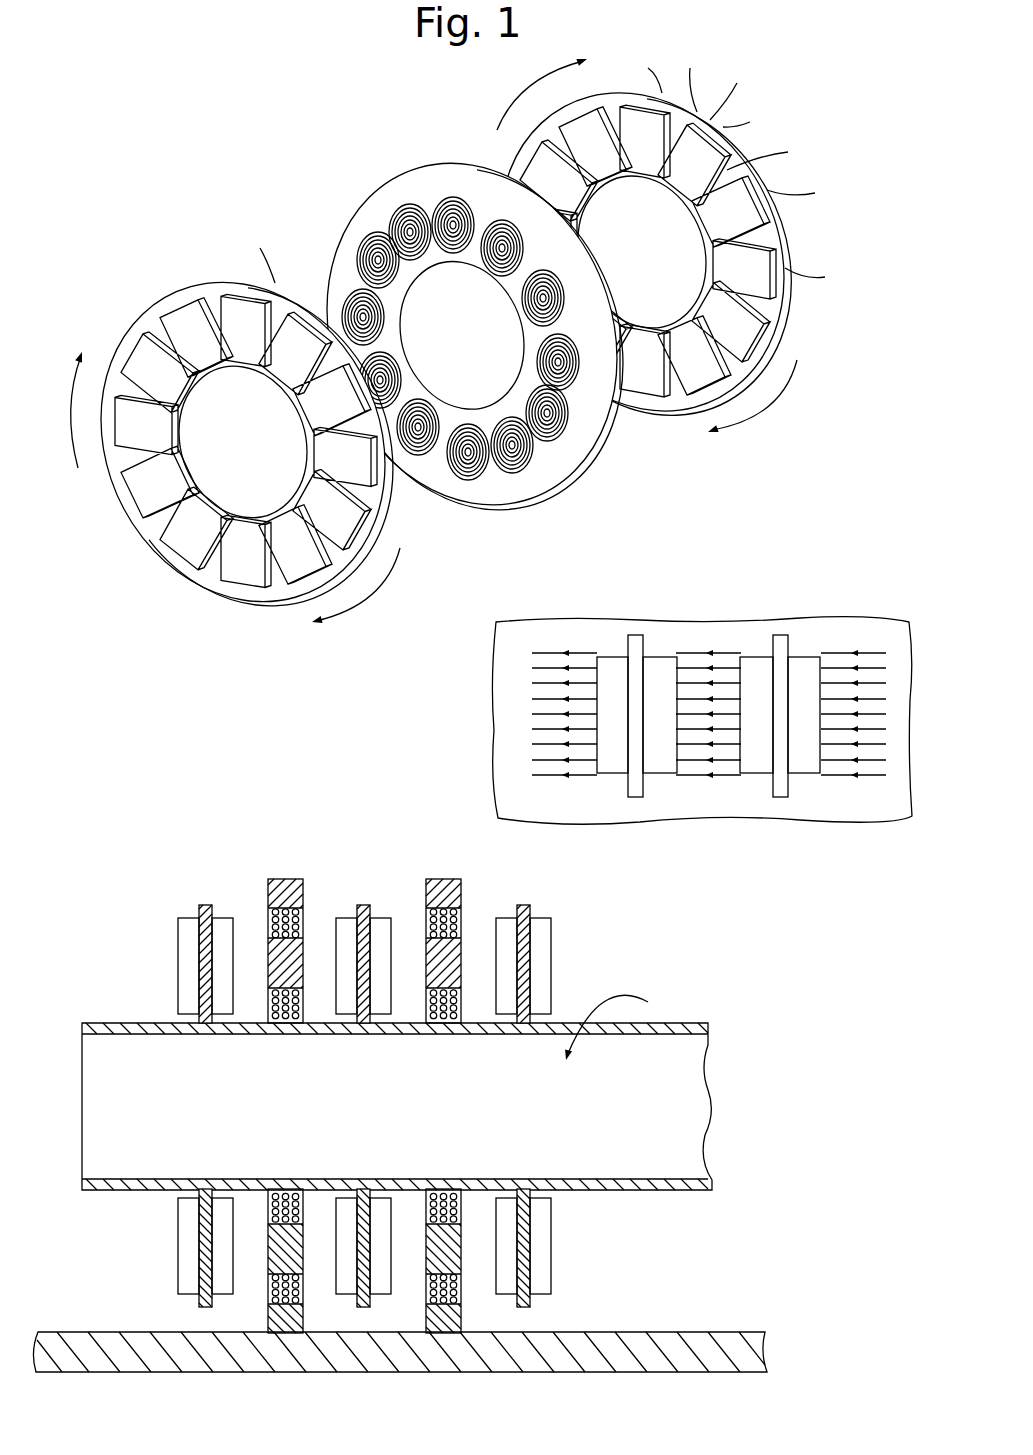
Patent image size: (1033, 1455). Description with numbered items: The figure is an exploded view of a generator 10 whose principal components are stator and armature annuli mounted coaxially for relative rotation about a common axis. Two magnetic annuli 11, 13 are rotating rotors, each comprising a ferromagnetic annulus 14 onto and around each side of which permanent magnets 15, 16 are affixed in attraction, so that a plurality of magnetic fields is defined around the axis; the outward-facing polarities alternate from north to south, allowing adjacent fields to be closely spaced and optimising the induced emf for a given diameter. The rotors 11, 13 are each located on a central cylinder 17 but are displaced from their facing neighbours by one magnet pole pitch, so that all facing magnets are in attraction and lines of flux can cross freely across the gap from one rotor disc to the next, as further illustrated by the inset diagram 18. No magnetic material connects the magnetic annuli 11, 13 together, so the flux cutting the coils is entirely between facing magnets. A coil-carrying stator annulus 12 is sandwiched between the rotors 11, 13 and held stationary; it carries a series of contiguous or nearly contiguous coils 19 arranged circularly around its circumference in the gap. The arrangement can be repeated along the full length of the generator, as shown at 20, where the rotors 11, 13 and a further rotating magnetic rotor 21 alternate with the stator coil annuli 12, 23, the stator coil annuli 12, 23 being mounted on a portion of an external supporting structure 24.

The generator 10 is at (220, 192).
The magnetic annulus 11 is at (235, 402).
The stator annulus 12 is at (494, 346).
The magnetic annulus 13 is at (783, 310).
The ferromagnetic annulus 14 is at (158, 523).
The permanent magnet 15 is at (317, 307).
The permanent magnet 16 is at (298, 303).
The central cylinder 17 is at (668, 1023).
The inset diagram 18 is at (855, 637).
The coil 19 is at (513, 477).
The repeated arrangement 20 is at (101, 952).
The rotating magnetic rotor 21 is at (528, 912).
The stator coil annulus 23 is at (430, 884).
The external supporting structure 24 is at (718, 1340).